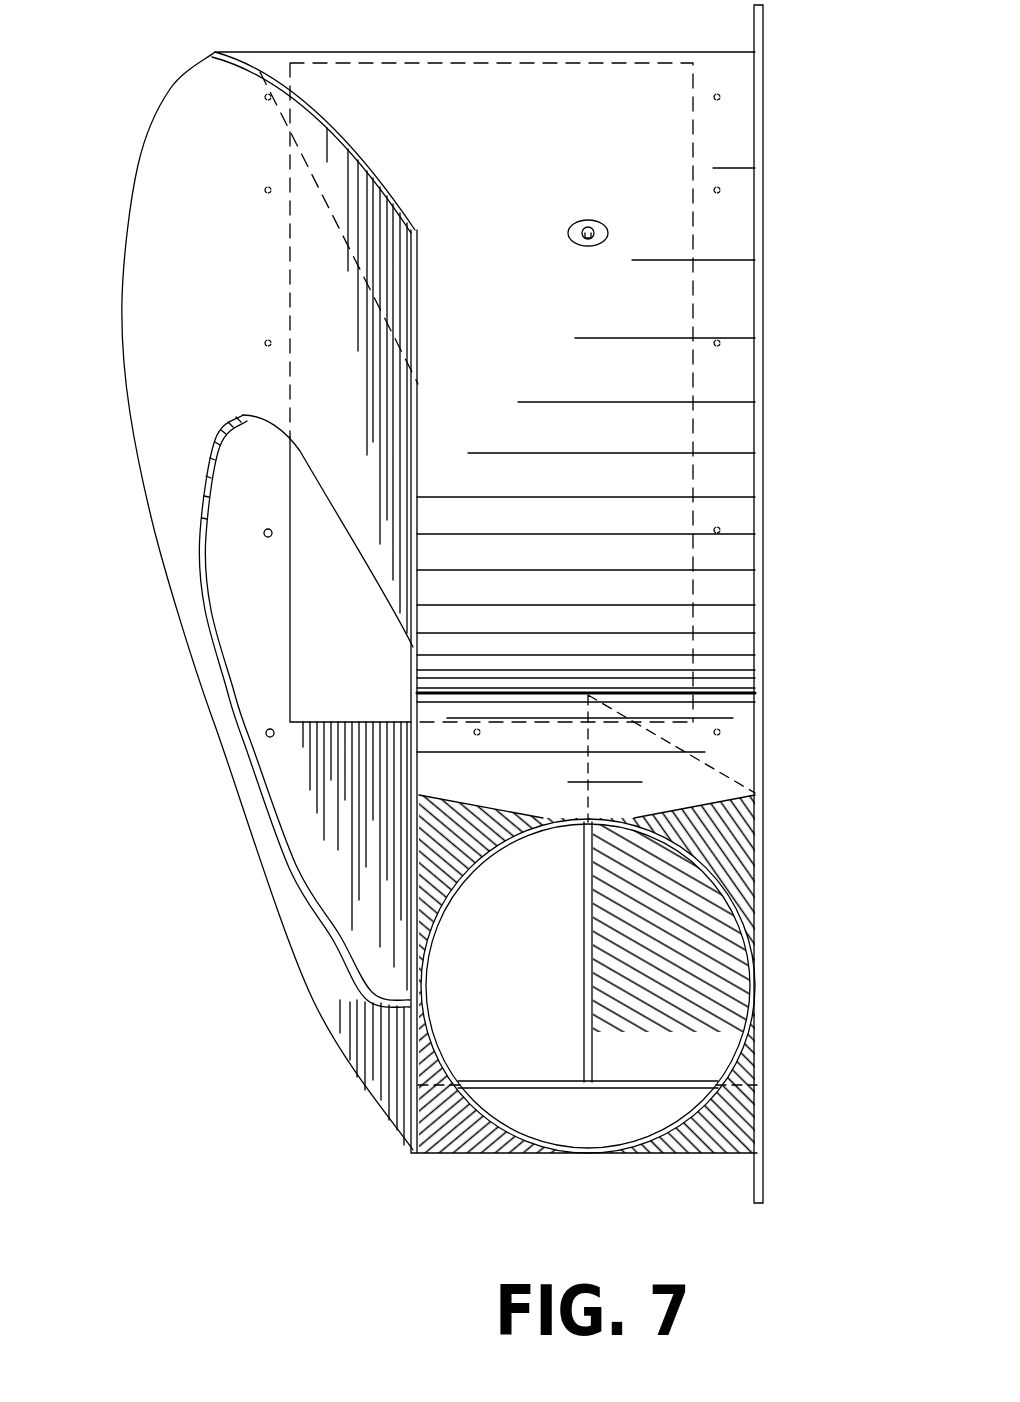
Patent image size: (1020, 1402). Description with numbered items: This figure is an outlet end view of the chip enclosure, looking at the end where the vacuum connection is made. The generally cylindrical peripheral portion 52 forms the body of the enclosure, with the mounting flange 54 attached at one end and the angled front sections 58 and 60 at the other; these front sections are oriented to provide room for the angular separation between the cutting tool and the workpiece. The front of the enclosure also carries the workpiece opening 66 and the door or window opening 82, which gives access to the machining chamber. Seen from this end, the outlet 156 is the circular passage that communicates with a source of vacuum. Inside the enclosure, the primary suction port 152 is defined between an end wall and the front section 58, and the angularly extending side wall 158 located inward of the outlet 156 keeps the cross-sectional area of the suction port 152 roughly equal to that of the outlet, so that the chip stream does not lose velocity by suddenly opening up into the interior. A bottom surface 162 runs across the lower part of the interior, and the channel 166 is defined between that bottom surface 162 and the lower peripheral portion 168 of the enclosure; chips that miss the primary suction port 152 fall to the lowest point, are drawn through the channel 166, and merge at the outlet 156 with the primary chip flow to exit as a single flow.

The peripheral portion 52 is at (638, 365).
The mounting flange 54 is at (764, 25).
The front section 58 is at (417, 822).
The front section 60 is at (180, 183).
The workpiece opening 66 is at (247, 596).
The door or window opening 82 is at (330, 652).
The primary suction port 152 is at (480, 1044).
The outlet 156 is at (752, 900).
The side wall 158 is at (727, 952).
The bottom surface 162 is at (683, 1075).
The channel 166 is at (561, 1120).
The lower peripheral portion 168 is at (688, 1153).